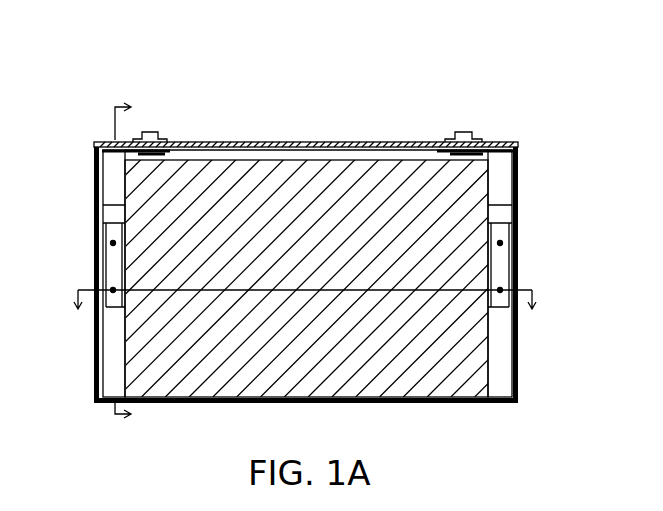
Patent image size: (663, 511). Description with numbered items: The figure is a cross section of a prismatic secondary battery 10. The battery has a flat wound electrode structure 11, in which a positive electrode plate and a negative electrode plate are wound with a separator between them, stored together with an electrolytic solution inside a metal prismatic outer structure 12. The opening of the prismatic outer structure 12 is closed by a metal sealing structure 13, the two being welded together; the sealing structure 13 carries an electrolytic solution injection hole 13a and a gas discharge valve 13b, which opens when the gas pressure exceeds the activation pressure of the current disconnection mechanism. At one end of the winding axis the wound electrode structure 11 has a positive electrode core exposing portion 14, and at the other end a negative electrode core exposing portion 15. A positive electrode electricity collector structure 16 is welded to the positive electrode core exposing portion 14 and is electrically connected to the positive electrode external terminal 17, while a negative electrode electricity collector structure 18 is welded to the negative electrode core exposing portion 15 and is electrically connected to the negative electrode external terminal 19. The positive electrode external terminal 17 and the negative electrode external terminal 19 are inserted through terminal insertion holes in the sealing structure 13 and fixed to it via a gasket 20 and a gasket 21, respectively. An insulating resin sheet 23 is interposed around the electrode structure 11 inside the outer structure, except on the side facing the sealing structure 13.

The prismatic secondary battery 10 is at (82, 104).
The wound electrode structure 11 is at (396, 396).
The prismatic outer structure 12 is at (518, 384).
The sealing structure 13 is at (311, 142).
The electrolytic solution injection hole 13a is at (364, 142).
The gas discharge valve 13b is at (244, 142).
The positive electrode core exposing portion 14 is at (108, 366).
The negative electrode core exposing portion 15 is at (500, 358).
The positive electrode electricity collector structure 16 is at (107, 158).
The positive electrode external terminal 17 is at (150, 134).
The negative electrode electricity collector structure 18 is at (498, 158).
The negative electrode external terminal 19 is at (474, 133).
The gasket 20 is at (170, 149).
The gasket 21 is at (444, 149).
The insulating resin sheet 23 is at (497, 403).